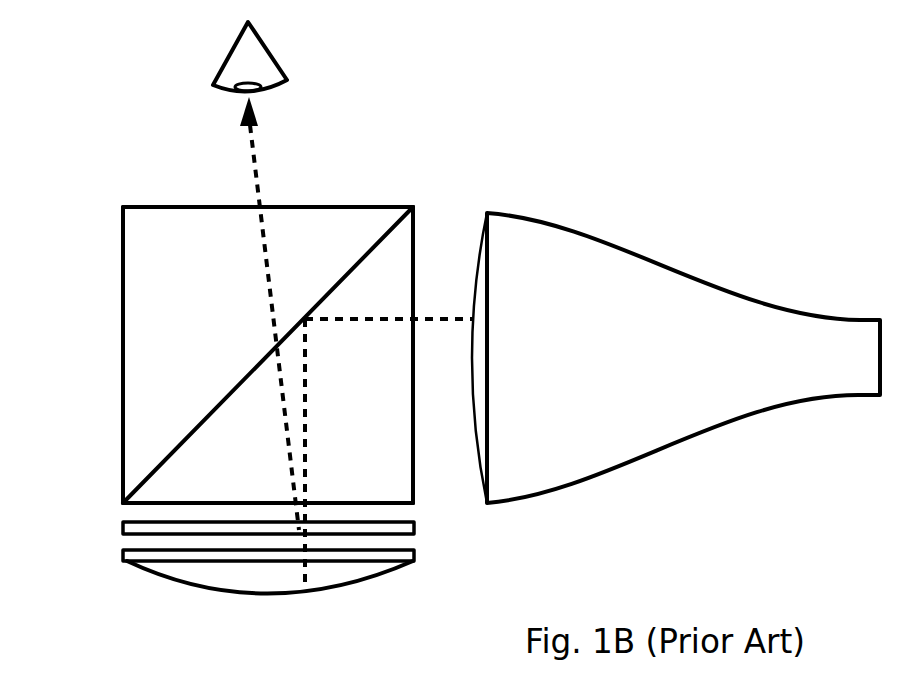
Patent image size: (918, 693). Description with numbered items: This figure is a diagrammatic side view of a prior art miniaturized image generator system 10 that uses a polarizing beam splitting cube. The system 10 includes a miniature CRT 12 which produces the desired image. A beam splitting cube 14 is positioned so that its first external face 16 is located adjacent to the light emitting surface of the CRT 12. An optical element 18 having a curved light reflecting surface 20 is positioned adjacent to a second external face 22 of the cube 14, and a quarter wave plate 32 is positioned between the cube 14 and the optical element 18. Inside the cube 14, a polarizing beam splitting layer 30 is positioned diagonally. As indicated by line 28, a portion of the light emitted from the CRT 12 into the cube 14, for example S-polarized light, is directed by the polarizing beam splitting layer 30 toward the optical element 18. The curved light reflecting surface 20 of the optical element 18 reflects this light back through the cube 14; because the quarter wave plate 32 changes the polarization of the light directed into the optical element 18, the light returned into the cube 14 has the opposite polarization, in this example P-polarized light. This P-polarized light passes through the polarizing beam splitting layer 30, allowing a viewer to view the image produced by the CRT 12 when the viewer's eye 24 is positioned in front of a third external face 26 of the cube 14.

The miniature image generator system 10 is at (458, 104).
The miniature CRT 12 is at (545, 248).
The beam splitting cube 14 is at (148, 326).
The first external face 16 is at (412, 426).
The optical element 18 is at (193, 568).
The curved light reflecting surface 20 is at (332, 588).
The second external face 22 is at (222, 502).
The viewer's eye 24 is at (257, 62).
The third external face 26 is at (336, 205).
The line 28 is at (345, 322).
The polarizing beam splitting layer 30 is at (267, 352).
The quarter wave plate 32 is at (120, 525).